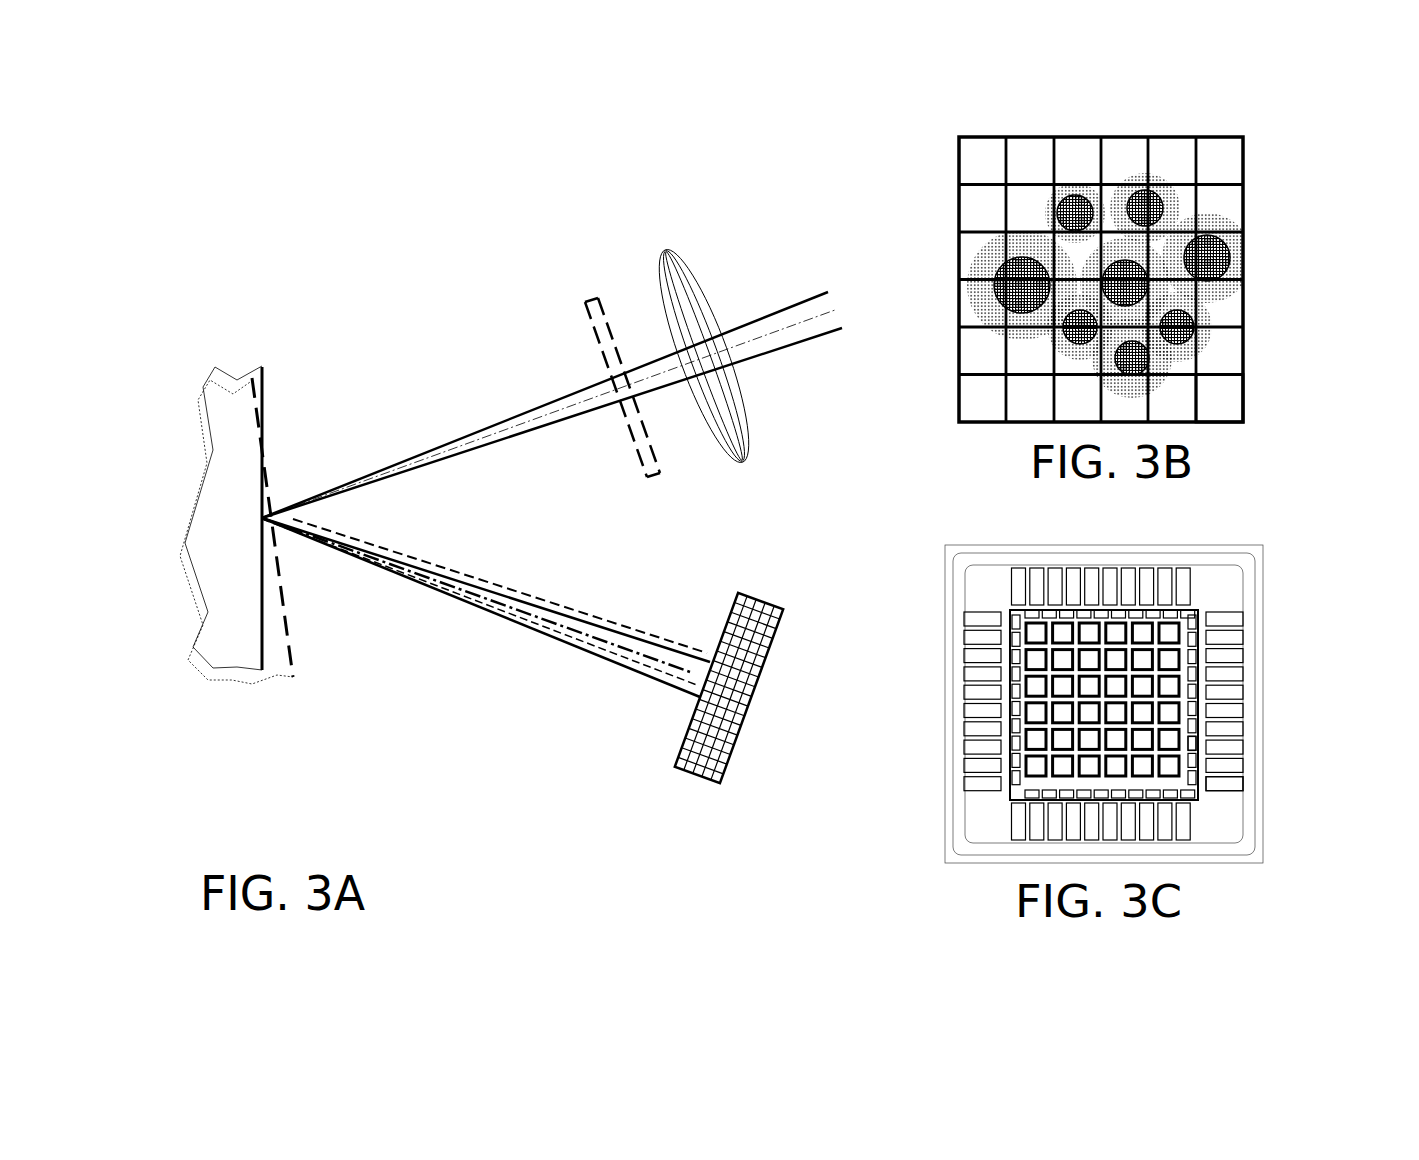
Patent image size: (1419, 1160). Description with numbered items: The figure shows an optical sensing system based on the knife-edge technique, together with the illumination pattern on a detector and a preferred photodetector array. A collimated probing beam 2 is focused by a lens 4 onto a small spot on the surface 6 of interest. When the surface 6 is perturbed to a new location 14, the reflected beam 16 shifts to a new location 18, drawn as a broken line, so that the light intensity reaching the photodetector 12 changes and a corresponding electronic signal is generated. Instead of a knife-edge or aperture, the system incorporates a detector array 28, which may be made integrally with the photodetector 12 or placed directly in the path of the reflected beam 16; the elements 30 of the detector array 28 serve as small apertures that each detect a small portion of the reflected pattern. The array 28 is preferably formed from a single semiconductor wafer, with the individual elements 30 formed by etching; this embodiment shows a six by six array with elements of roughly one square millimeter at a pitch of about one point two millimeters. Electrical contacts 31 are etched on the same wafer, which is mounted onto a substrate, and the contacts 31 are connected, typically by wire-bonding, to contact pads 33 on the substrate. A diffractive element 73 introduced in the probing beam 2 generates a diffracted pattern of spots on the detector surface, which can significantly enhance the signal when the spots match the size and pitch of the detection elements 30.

In FIG. 3A, the probing light beam 2 is at (568, 392).
In FIG. 3A, the lens 4 is at (663, 248).
In FIG. 3A, the surface 6 is at (263, 380).
In FIG. 3A, the photodetector 12 is at (728, 733).
In FIG. 3A, the new location of surface 14 is at (293, 662).
In FIG. 3A, the reflected beam 16 is at (585, 648).
In FIG. 3A, the new location of reflected beam 18 is at (580, 613).
In FIG. 3B, the detector array 28 is at (1266, 186).
In FIG. 3C, the detector array 28 is at (1284, 606).
In FIG. 3B, the elements of detector array 30 is at (1213, 392).
In FIG. 3C, the elements of detector array 30 is at (1172, 720).
In FIG. 3C, the electrical contacts 31 is at (1193, 752).
In FIG. 3C, the contact pads 33 is at (1223, 790).
In FIG. 3A, the diffractive element 73 is at (590, 300).